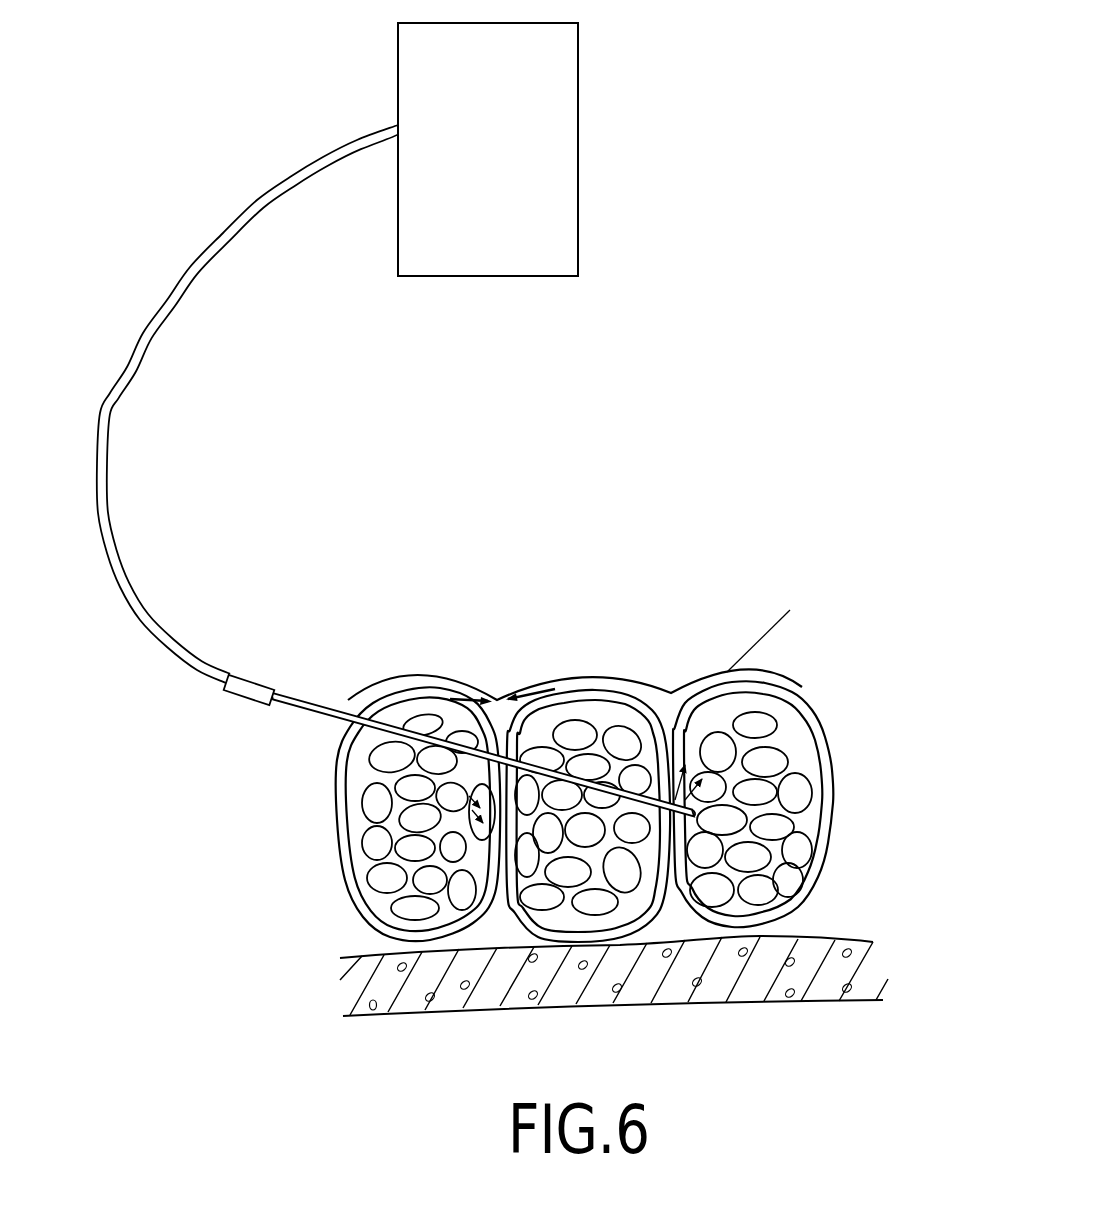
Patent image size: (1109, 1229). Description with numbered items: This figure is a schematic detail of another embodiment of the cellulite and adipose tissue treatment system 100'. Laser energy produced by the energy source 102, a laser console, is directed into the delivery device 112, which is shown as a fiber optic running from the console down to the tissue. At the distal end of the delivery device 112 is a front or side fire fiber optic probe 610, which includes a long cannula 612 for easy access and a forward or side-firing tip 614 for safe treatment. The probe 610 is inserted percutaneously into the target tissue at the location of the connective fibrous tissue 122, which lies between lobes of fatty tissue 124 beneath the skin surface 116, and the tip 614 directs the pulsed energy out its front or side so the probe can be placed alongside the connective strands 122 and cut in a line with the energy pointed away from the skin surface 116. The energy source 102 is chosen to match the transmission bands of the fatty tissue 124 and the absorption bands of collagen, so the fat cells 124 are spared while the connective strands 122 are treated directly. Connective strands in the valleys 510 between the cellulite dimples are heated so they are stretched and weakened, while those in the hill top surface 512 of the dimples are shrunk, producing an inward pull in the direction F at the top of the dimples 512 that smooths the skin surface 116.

The cellulite and adipose tissue treatment system 100' is at (510, 519).
The energy source 102 is at (466, 217).
The delivery device 112 is at (134, 347).
The skin surface 116 is at (640, 683).
The connective tissue strands 122 is at (672, 733).
The fatty tissue 124 is at (415, 820).
The valleys of the cellulite dimples 510 is at (672, 697).
The hill top surface of the cellulite dimples 512 is at (588, 670).
The side fire fiber optic probe 610 is at (245, 670).
The cannula 612 is at (313, 717).
The side-firing tip 614 is at (690, 813).